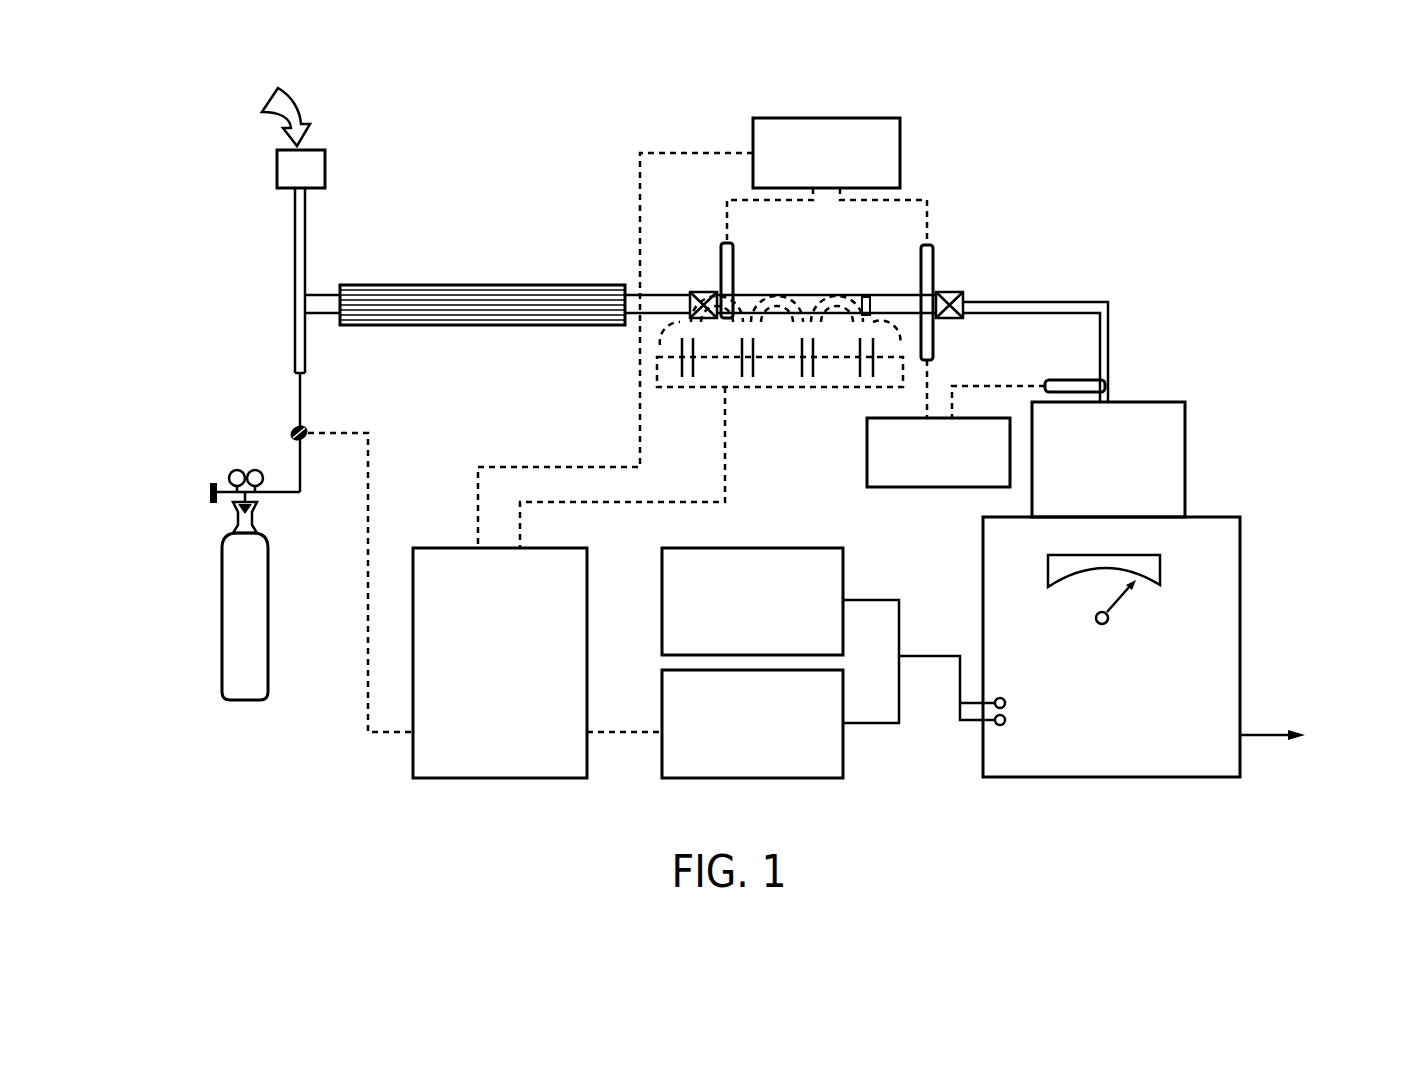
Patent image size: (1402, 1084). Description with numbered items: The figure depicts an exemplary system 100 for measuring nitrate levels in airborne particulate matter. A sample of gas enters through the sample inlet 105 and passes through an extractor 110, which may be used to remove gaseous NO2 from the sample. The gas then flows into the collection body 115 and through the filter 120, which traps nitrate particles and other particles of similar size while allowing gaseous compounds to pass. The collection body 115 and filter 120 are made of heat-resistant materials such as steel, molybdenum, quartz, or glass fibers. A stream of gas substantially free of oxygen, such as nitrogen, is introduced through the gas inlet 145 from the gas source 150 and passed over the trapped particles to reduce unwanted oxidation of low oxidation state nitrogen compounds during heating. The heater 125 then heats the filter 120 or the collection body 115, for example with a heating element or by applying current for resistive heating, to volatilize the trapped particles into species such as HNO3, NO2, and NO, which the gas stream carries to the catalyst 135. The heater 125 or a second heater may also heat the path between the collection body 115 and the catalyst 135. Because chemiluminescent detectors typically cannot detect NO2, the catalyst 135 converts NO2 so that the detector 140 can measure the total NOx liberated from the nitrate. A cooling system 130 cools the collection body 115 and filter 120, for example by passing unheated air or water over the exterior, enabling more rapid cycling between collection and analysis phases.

The system 100 is at (1060, 136).
The sample inlet 105 is at (328, 156).
The extractor 110 is at (495, 285).
The collection body 115 is at (763, 295).
The filter 120 is at (873, 297).
The heater 125 is at (900, 143).
The cooling system 130 is at (683, 388).
The catalyst 135 is at (1185, 425).
The detector 140 is at (1242, 542).
The gas inlet 145 is at (308, 432).
The gas source 150 is at (270, 600).